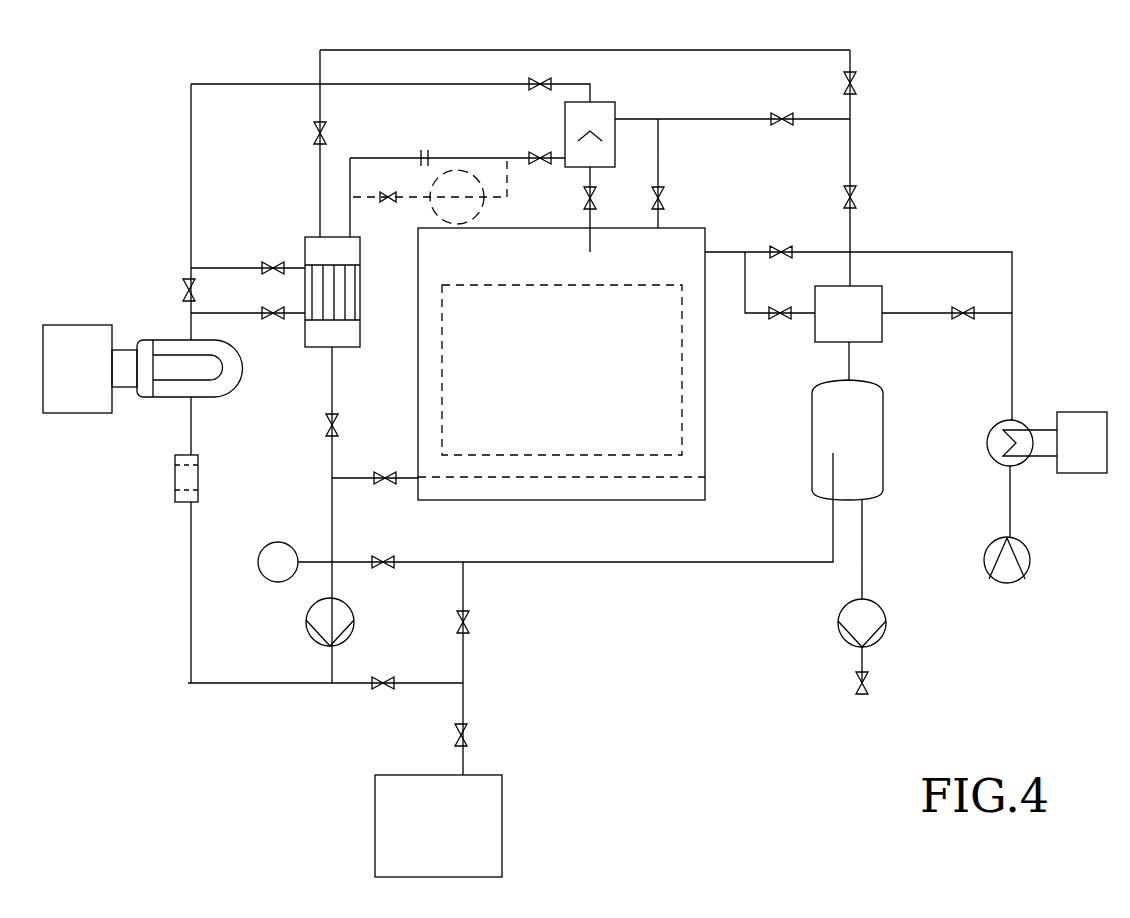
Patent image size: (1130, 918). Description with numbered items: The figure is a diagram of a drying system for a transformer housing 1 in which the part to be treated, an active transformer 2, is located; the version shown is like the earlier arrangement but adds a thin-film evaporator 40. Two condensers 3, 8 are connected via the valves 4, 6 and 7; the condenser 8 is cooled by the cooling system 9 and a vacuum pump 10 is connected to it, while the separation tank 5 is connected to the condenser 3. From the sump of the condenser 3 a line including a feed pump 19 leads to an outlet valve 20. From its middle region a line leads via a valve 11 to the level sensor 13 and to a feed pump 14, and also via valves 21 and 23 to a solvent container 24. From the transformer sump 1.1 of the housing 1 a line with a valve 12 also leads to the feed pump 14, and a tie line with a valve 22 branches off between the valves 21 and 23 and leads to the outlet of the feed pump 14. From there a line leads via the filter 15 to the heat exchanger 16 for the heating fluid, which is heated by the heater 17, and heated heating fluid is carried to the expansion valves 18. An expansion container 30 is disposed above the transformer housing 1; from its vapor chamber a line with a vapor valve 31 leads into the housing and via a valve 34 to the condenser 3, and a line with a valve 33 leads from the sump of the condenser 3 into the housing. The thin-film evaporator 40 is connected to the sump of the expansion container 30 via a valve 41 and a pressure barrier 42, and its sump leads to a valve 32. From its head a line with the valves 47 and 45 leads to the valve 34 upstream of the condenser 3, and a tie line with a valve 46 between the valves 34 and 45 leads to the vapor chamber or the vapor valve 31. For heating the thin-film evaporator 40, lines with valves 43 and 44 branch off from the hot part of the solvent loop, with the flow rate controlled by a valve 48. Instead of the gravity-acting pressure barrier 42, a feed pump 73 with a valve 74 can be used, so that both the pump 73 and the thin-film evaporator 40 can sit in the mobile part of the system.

The transformer housing 1 is at (706, 448).
The transformer sump 1.1 is at (558, 502).
The active transformer 2 is at (688, 385).
The condenser 3 is at (872, 327).
The valve 4 is at (779, 322).
The separation tank 5 is at (882, 448).
The valve 6 is at (962, 322).
The valve 7 is at (781, 242).
The condenser 8 is at (988, 442).
The cooling system 9 is at (1093, 416).
The vacuum pump 10 is at (984, 560).
The valve 11 is at (383, 553).
The valve 12 is at (385, 468).
The level sensor 13 is at (262, 572).
The feed pump 14 is at (306, 620).
The filter 15 is at (198, 478).
The heat exchanger 16 is at (178, 378).
The heater 17 is at (75, 333).
The expansion valves 18 is at (542, 92).
The feed pump 19 is at (886, 623).
The outlet valve 20 is at (870, 683).
The valve 21 is at (455, 622).
The valve 22 is at (388, 692).
The valve 23 is at (454, 735).
The solvent container 24 is at (488, 775).
The expansion container 30 is at (615, 108).
The vapor valve 31 is at (665, 198).
The valve 32 is at (325, 425).
The valve 33 is at (597, 198).
The valve 34 is at (858, 197).
The thin-film evaporator 40 is at (305, 290).
The valve 41 is at (538, 152).
The pressure barrier 42 is at (424, 148).
The valve 43 is at (273, 320).
The valve 44 is at (270, 262).
The valve 45 is at (858, 83).
The valve 46 is at (778, 112).
The valve 47 is at (312, 133).
The valve 48 is at (184, 290).
The feed pump 73 is at (452, 168).
The valve 74 is at (390, 207).